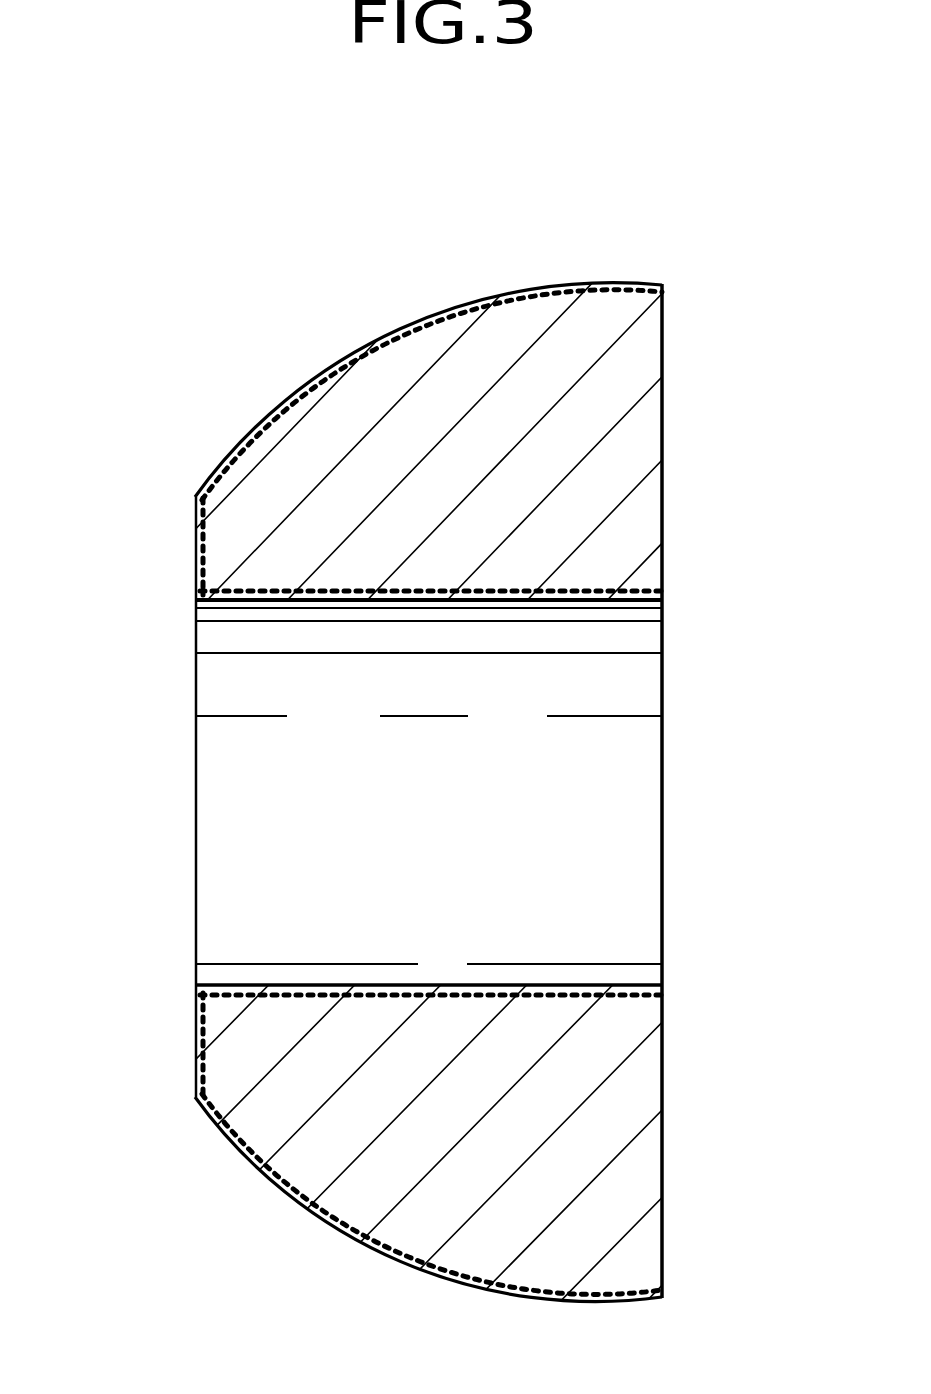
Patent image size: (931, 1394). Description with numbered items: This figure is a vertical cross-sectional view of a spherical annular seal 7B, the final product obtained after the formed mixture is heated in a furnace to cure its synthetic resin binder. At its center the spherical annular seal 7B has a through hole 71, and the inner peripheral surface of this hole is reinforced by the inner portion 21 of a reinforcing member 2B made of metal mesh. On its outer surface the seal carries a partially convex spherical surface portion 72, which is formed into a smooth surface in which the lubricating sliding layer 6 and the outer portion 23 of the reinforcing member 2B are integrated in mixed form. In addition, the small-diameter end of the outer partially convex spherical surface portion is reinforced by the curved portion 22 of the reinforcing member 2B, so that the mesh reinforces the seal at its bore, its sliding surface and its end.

The spherical annular seal 7B is at (681, 469).
The partially convex spherical surface portion 72 is at (477, 300).
The lubricating sliding layer 6 is at (345, 348).
The outer portion 23 is at (270, 403).
The curved portion 22 is at (195, 532).
The reinforcing member 2B is at (195, 597).
The inner portion 21 is at (361, 608).
The through hole 71 is at (510, 603).